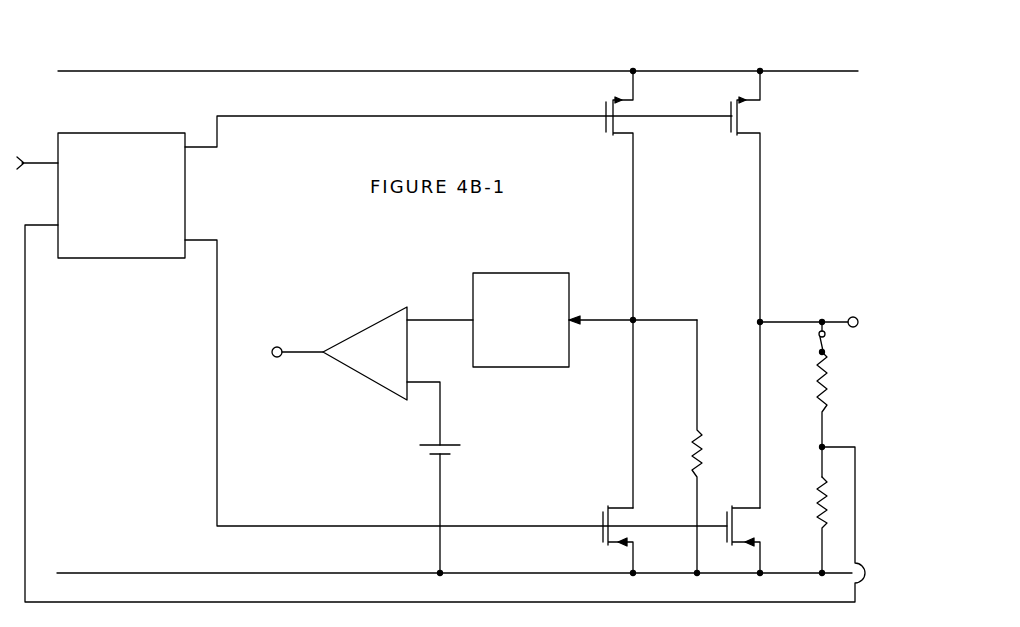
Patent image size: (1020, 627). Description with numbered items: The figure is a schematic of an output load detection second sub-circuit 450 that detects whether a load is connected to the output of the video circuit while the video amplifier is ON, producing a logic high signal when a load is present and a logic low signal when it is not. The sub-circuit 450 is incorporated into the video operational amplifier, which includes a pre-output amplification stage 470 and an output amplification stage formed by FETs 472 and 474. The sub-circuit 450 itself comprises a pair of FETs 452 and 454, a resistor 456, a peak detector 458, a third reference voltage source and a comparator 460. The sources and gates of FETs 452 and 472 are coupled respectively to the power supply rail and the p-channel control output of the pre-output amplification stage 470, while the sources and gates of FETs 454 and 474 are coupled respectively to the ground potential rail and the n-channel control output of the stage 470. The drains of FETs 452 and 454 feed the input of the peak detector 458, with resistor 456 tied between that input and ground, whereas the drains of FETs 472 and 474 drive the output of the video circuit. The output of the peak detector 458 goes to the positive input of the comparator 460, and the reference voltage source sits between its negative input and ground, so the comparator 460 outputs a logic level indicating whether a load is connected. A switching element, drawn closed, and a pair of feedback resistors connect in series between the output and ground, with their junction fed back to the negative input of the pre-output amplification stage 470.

The output load detection second sub-circuit 450 is at (693, 62).
The FET 452 is at (633, 126).
The FET 454 is at (627, 518).
The resistor 456 is at (699, 452).
The peak detector 458 is at (538, 273).
The comparator 460 is at (360, 332).
The pre-output amplification stage 470 is at (116, 258).
The FET 472 is at (762, 116).
The FET 474 is at (752, 522).